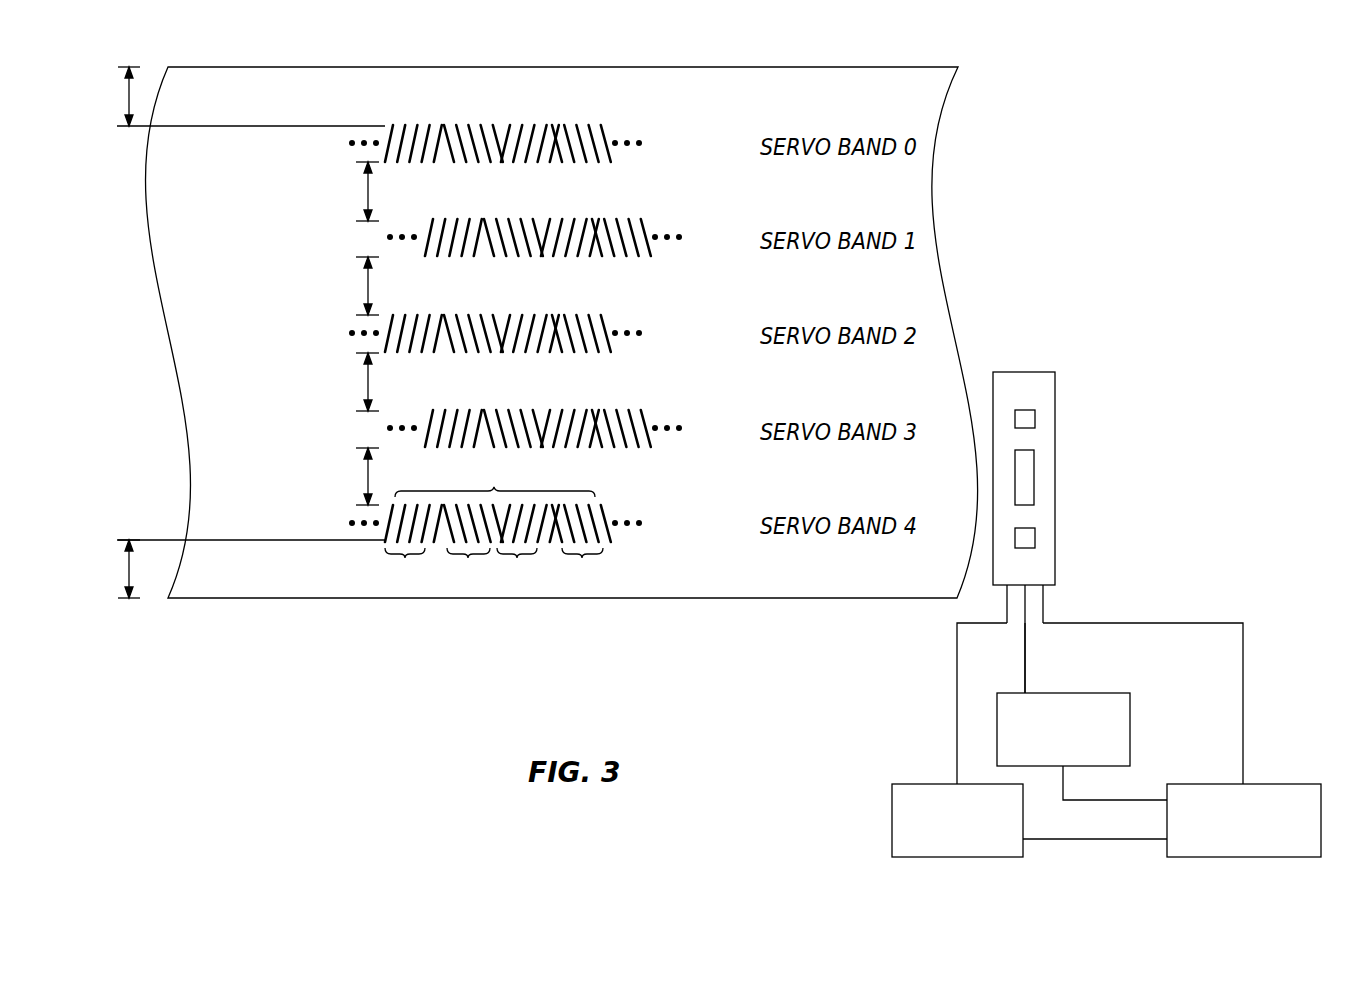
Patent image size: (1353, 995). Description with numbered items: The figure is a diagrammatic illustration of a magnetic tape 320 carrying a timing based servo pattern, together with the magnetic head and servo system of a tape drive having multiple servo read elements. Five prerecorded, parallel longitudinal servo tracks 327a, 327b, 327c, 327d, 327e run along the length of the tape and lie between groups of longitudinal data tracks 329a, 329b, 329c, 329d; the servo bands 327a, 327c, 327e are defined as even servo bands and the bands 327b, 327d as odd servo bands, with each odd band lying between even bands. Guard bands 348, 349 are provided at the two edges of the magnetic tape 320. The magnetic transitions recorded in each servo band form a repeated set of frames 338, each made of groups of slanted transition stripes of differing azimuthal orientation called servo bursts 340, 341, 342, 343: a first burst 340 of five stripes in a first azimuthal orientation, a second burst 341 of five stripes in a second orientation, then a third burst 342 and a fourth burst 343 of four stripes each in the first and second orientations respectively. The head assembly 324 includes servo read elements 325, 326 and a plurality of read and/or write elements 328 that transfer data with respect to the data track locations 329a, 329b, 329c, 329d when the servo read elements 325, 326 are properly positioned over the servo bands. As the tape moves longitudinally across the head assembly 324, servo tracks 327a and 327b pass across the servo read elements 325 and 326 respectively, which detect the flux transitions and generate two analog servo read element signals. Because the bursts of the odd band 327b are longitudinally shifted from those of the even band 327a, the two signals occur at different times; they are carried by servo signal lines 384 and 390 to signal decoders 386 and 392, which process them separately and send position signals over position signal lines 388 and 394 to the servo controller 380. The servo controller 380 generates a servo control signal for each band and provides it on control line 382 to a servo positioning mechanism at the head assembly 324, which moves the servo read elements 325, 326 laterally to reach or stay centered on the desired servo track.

The magnetic tape 320 is at (826, 67).
The head assembly 324 is at (1025, 372).
The servo read element 325 is at (1035, 418).
The servo read element 326 is at (1035, 538).
The read and/or write elements 328 is at (1034, 478).
The servo track 327a is at (600, 130).
The servo track 327b is at (640, 225).
The servo track 327c is at (600, 325).
The servo track 327d is at (640, 419).
The servo track 327e is at (600, 514).
The longitudinal data tracks 329a is at (368, 183).
The longitudinal data tracks 329b is at (368, 279).
The longitudinal data tracks 329c is at (368, 375).
The longitudinal data tracks 329d is at (368, 470).
The frames 338 is at (495, 479).
The servo burst 340 is at (409, 571).
The servo burst 341 is at (471, 571).
The servo burst 342 is at (521, 571).
The servo burst 343 is at (585, 571).
The guard band 348 is at (125, 97).
The guard band 349 is at (125, 570).
The servo controller 380 is at (1290, 784).
The control line 382 is at (1143, 623).
The servo signal line 384 is at (957, 703).
The signal decoder 386 is at (892, 820).
The position signal line 388 is at (1095, 840).
The servo signal line 390 is at (1025, 670).
The signal decoder 392 is at (1130, 728).
The position signal line 394 is at (1115, 800).